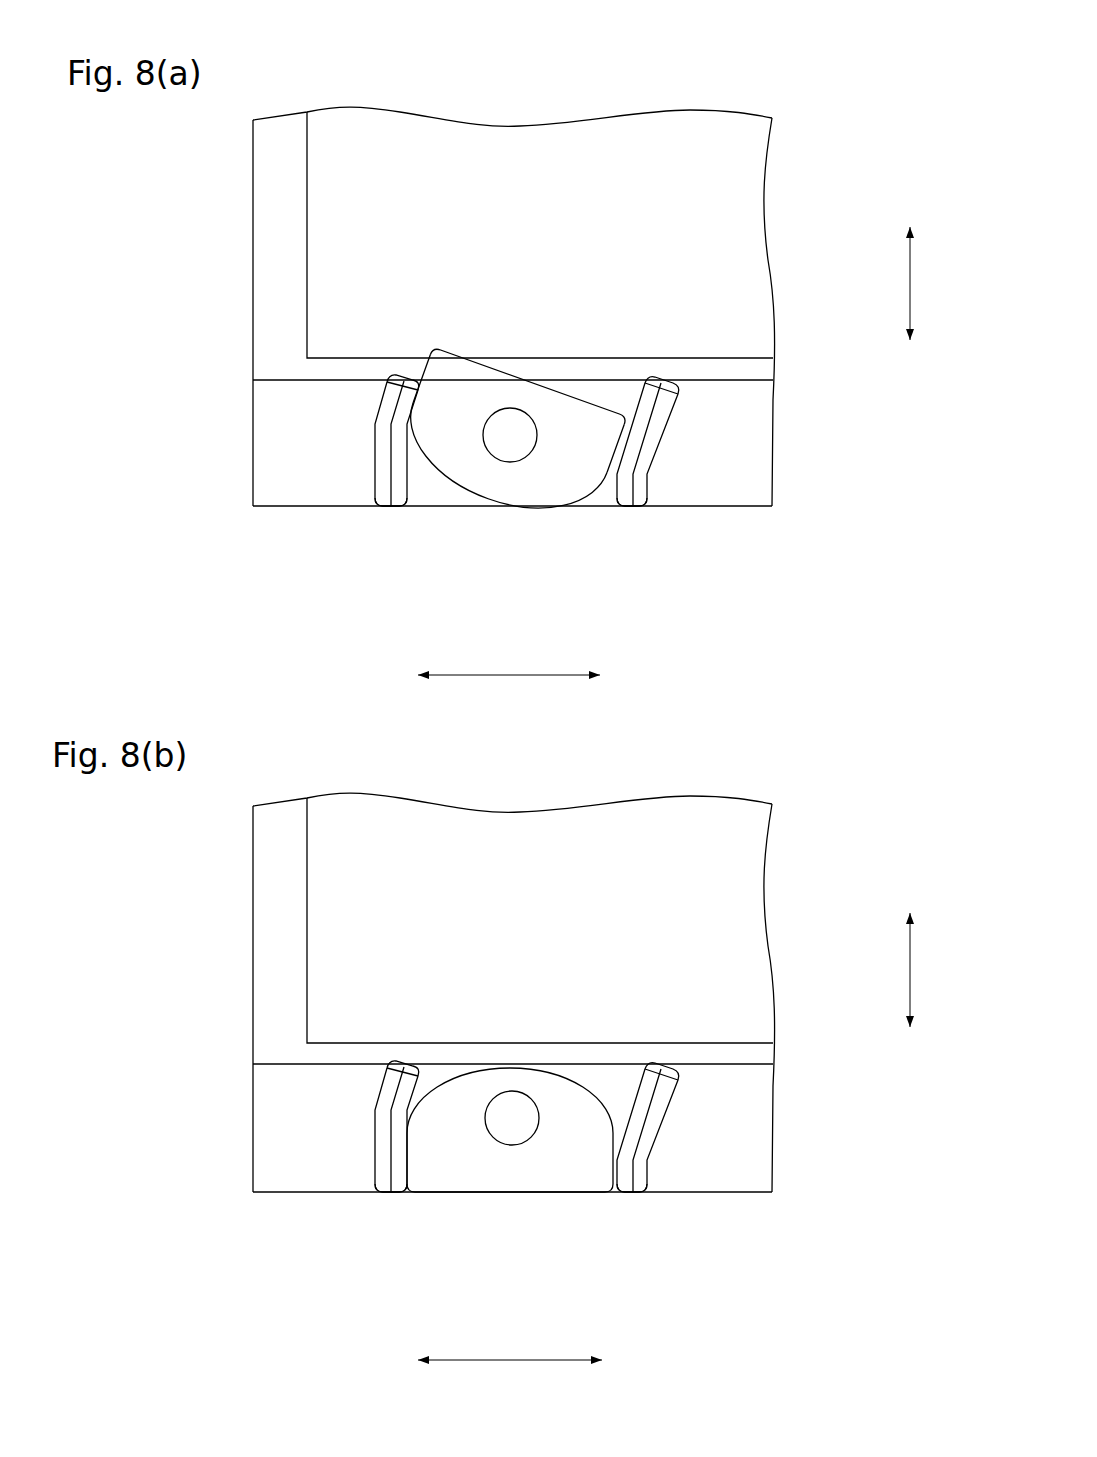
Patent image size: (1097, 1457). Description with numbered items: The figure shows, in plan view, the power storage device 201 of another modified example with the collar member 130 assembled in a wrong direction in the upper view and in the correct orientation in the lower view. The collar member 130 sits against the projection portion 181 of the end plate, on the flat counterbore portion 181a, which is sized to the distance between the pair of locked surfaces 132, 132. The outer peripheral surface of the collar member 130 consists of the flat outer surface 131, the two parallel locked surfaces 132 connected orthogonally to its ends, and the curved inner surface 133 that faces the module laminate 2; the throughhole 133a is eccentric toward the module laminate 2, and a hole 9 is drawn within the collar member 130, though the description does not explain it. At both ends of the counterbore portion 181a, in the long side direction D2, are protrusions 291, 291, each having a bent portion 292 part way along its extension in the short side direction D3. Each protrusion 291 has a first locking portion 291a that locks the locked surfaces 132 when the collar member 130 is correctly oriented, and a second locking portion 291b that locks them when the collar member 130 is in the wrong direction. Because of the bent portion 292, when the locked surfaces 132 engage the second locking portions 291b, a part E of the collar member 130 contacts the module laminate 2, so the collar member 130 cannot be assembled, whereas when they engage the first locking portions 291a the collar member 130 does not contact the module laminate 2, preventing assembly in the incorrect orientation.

In FIG. 8A, the module laminate 2 is at (730, 247).
In FIG. 8B, the module laminate 2 is at (730, 959).
In FIG. 8A, the hole 9 is at (512, 437).
In FIG. 8B, the hole 9 is at (518, 1124).
In FIG. 8A, the collar member 130 is at (511, 469).
In FIG. 8B, the collar member 130 is at (593, 1152).
In FIG. 8A, the outer surface 131 is at (593, 382).
In FIG. 8B, the outer surface 131 is at (438, 1193).
In FIG. 8A, the locked surface 132 is at (420, 380).
In FIG. 8B, the locked surface 132 is at (377, 1160).
In FIG. 8A, the inner surface 133 is at (511, 462).
In FIG. 8B, the inner surface 133 is at (593, 1139).
In FIG. 8A, the throughhole 133a is at (530, 457).
In FIG. 8B, the throughhole 133a is at (502, 1130).
In FIG. 8A, the projection portion 181 is at (465, 354).
In FIG. 8B, the projection portion 181 is at (511, 968).
In FIG. 8A, the counterbore portion 181a is at (432, 478).
In FIG. 8B, the counterbore portion 181a is at (440, 1078).
In FIG. 8A, the power storage device 201 is at (699, 92).
In FIG. 8B, the power storage device 201 is at (703, 787).
In FIG. 8A, the protrusion 291 is at (510, 471).
In FIG. 8B, the protrusion 291 is at (513, 1167).
In FIG. 8A, the first locking portion 291a is at (400, 477).
In FIG. 8B, the first locking portion 291a is at (397, 1180).
In FIG. 8A, the second locking portion 291b is at (393, 382).
In FIG. 8B, the second locking portion 291b is at (403, 1072).
In FIG. 8A, the bent portion 292 is at (375, 427).
In FIG. 8B, the bent portion 292 is at (375, 1112).
In FIG. 8A, the part of the collar member E is at (452, 342).
In FIG. 8A, the long side direction D2 is at (509, 662).
In FIG. 8B, the long side direction D2 is at (510, 1346).
In FIG. 8A, the short side direction D3 is at (929, 283).
In FIG. 8B, the short side direction D3 is at (929, 970).